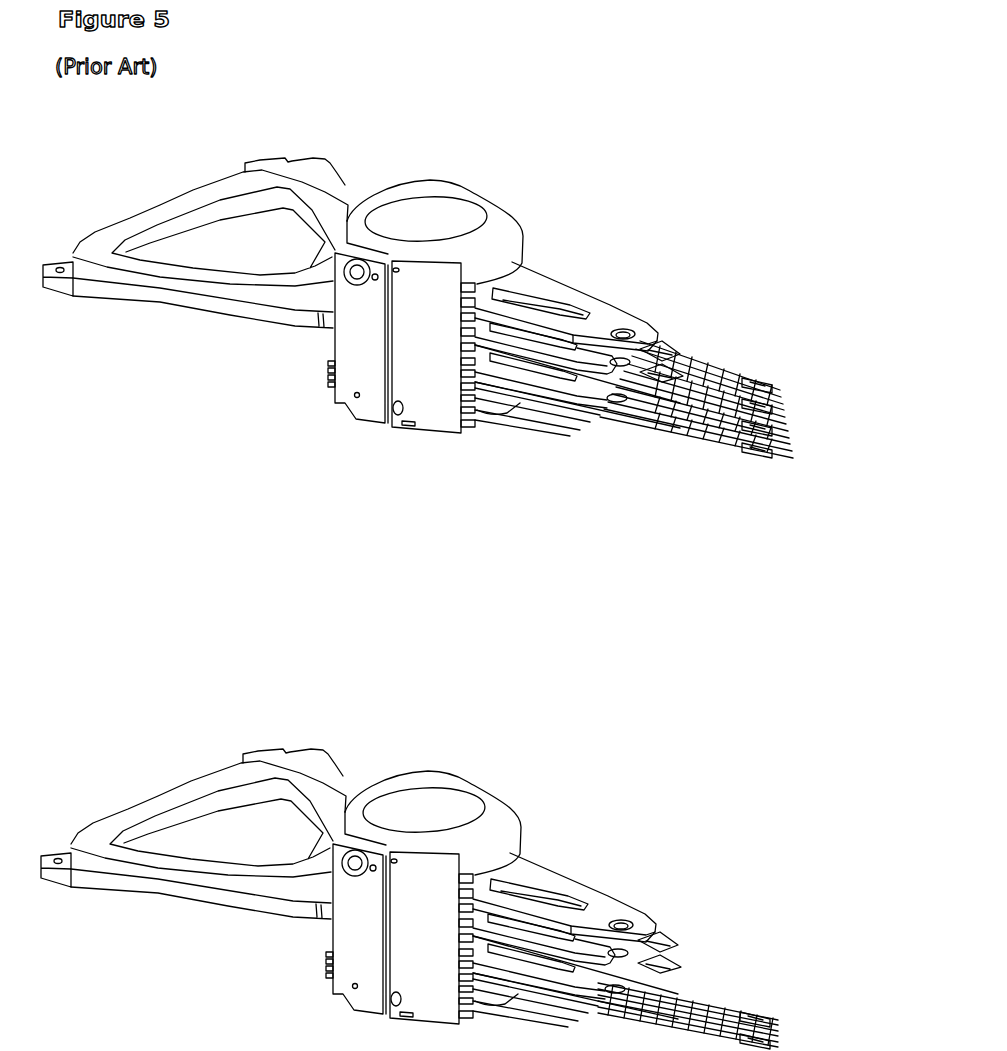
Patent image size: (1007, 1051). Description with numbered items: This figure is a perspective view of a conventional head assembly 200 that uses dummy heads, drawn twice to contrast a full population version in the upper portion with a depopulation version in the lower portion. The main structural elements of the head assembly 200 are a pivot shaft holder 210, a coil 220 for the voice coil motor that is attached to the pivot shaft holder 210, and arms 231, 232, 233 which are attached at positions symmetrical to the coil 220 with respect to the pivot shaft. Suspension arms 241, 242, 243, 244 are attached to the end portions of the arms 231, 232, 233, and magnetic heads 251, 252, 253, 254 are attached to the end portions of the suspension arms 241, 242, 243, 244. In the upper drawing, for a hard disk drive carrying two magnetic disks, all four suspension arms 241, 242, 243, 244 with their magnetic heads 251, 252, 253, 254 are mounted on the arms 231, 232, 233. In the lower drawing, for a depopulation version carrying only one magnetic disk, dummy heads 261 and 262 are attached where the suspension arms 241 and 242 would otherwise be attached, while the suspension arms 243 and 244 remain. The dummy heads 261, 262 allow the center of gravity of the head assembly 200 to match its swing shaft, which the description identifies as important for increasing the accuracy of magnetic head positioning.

The head assembly 200 is at (521, 185).
The pivot shaft holder 210 is at (512, 262).
The coil for VCM 220 is at (180, 305).
The arm 231 is at (603, 310).
The arm 232 is at (520, 403).
The arm 233 is at (560, 417).
The suspension arm 241 is at (673, 348).
The suspension arm 242 is at (707, 370).
The suspension arm 243 is at (720, 447).
The suspension arm 244 is at (672, 430).
The magnetic head 251 is at (783, 390).
The magnetic head 252 is at (777, 410).
The magnetic head 253 is at (777, 433).
The magnetic head 254 is at (783, 457).
The dummy head 261 is at (713, 919).
The dummy head 262 is at (720, 958).